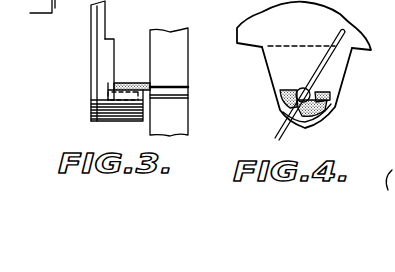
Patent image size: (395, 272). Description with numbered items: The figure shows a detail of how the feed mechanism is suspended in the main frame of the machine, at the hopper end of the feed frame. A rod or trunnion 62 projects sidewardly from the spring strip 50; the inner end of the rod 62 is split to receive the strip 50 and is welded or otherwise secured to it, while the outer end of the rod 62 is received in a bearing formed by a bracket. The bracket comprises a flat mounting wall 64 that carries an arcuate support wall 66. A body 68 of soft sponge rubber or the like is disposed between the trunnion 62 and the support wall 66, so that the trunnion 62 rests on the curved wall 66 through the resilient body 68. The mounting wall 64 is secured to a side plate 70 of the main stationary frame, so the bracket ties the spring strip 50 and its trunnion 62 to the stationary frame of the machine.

In FIG. 3, the spring strip 50 is at (178, 65).
In FIG. 4, the spring strip 50 is at (326, 63).
In FIG. 3, the rod or trunnion 62 is at (188, 92).
In FIG. 4, the rod or trunnion 62 is at (325, 97).
In FIG. 3, the flat mounting wall 64 is at (112, 50).
In FIG. 4, the flat mounting wall 64 is at (275, 70).
In FIG. 3, the arcuate support wall 66 is at (127, 113).
In FIG. 4, the arcuate support wall 66 is at (310, 122).
In FIG. 3, the body of soft sponge rubber 68 is at (125, 83).
In FIG. 4, the body of soft sponge rubber 68 is at (322, 115).
In FIG. 3, the side plate 70 is at (99, 16).
In FIG. 4, the side plate 70 is at (330, 25).